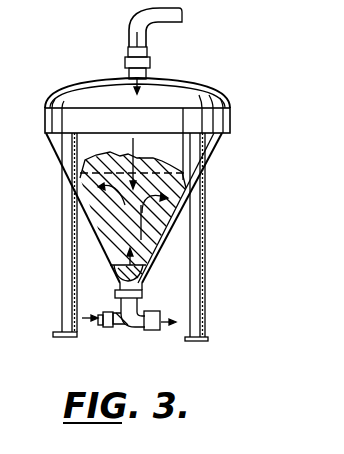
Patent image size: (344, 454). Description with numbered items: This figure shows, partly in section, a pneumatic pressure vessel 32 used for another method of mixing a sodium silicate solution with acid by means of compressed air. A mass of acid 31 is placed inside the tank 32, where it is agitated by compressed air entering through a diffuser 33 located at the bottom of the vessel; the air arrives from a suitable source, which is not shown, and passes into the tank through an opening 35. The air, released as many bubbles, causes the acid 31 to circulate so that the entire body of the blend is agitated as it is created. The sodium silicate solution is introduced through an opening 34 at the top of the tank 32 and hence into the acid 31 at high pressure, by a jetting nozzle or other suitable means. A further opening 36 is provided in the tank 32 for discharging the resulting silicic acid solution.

The mass of acid 31 is at (153, 221).
The pneumatic pressure vessel 32 is at (220, 148).
The diffuser 33 is at (138, 268).
The opening 34 is at (140, 72).
The opening 35 is at (106, 329).
The opening 36 is at (160, 331).